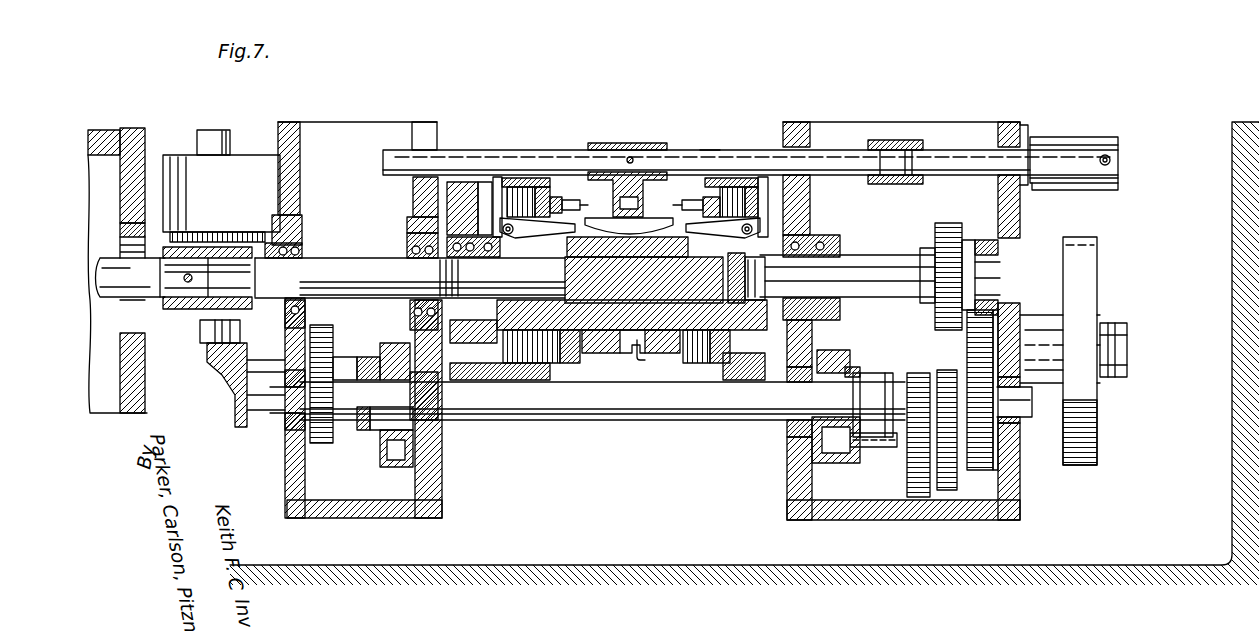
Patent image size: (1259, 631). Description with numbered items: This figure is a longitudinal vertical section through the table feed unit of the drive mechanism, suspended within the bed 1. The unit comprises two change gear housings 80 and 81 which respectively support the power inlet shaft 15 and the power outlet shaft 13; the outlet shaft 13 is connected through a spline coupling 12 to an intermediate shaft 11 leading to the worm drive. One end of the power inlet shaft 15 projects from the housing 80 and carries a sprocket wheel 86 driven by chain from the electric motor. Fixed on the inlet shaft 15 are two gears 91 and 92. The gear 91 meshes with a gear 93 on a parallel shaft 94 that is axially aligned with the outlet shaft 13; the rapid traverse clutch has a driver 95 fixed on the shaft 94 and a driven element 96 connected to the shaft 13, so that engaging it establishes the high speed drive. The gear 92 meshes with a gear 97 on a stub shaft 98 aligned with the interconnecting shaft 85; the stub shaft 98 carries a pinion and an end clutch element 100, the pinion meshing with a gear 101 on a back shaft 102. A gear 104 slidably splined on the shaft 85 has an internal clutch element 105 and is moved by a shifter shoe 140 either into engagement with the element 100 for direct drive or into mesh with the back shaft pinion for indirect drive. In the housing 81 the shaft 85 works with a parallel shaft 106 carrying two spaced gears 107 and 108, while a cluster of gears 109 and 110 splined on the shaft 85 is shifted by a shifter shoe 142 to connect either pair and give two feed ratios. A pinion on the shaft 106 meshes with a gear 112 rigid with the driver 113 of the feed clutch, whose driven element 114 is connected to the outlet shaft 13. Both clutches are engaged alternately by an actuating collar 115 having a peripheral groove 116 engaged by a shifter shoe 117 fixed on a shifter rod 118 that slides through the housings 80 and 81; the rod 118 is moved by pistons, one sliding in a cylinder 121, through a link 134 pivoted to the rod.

The bed 1 is at (1238, 388).
The intermediate shaft 11 is at (120, 288).
The spline coupling 12 is at (180, 310).
The power outlet shaft 13 is at (342, 258).
The power inlet shaft 15 is at (895, 320).
The change gear housing 80 is at (800, 125).
The change gear housing 81 is at (290, 124).
The shaft 85 is at (637, 420).
The sprocket wheel 86 is at (1088, 283).
The gear 91 is at (935, 345).
The gear 92 is at (1000, 347).
The gear 93 is at (948, 224).
The shaft 94 is at (884, 255).
The driver 95 is at (725, 368).
The driven element 96 is at (714, 196).
The gear 97 is at (990, 465).
The stub shaft 98 is at (1010, 397).
The end clutch element 100 is at (905, 372).
The gear 101 is at (918, 497).
The back shaft 102 is at (880, 447).
The gear 104 is at (843, 352).
The internal clutch element 105 is at (866, 373).
The shaft 106 is at (262, 408).
The gear 107 is at (390, 345).
The gear 108 is at (328, 328).
The gear 109 is at (395, 443).
The gear 110 is at (368, 430).
The gear 112 is at (463, 182).
The driver 113 is at (525, 178).
The driven element 114 is at (555, 195).
The actuating collar 115 is at (614, 355).
The peripheral groove 116 is at (645, 357).
The shifter shoe 117 is at (640, 143).
The shifter rod 118 is at (707, 152).
The cylinder 121 is at (1078, 140).
The link 134 is at (913, 145).
The shifter shoe 140 is at (818, 462).
The shifter shoe 142 is at (395, 462).